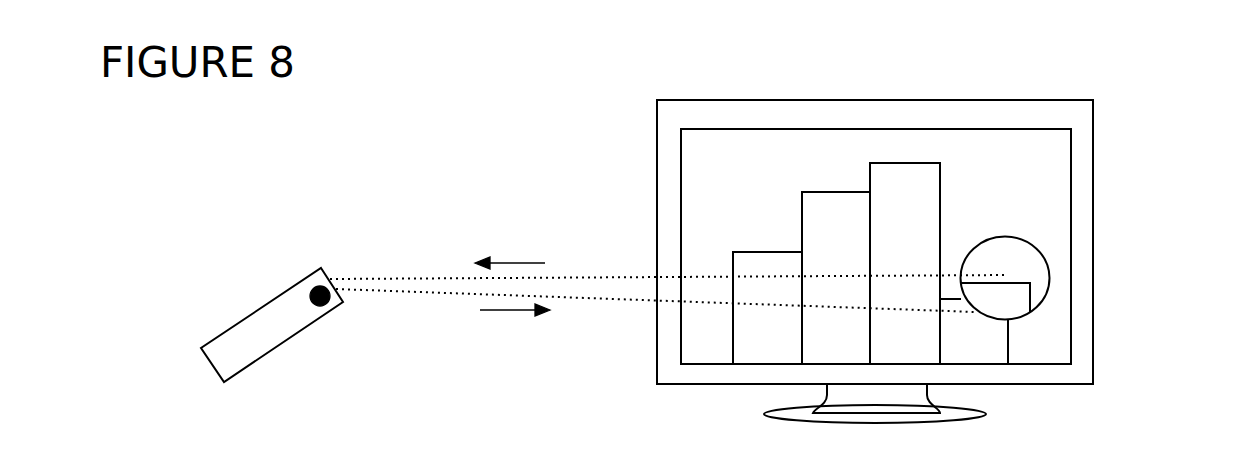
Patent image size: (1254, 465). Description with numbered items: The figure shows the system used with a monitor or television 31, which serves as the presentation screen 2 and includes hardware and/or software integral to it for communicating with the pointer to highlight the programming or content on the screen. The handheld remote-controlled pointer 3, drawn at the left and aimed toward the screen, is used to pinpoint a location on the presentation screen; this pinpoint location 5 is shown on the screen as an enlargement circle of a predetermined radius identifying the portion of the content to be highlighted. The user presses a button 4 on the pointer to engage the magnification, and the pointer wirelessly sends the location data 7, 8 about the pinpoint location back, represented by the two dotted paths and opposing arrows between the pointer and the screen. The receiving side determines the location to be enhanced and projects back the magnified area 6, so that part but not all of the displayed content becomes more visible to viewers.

The presentation screen 2 is at (1008, 129).
The pointer 3 is at (255, 312).
The button 4 is at (312, 285).
The pinpoint location 5 is at (1008, 283).
The magnified area 6 is at (1050, 275).
The location data 7 is at (436, 277).
The location data 8 is at (427, 290).
The monitor or television 31 is at (1093, 384).